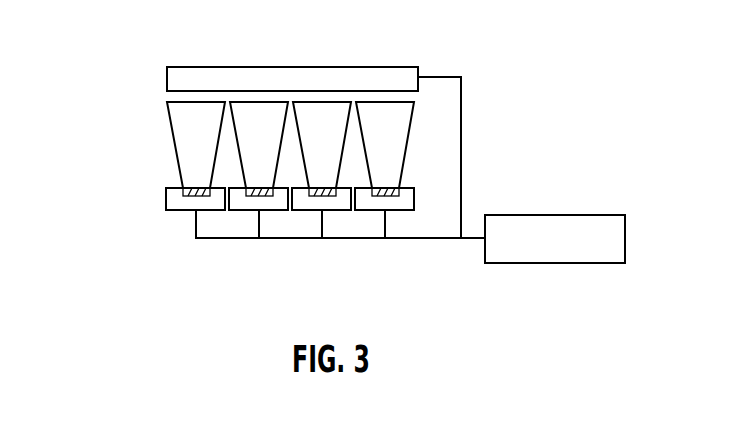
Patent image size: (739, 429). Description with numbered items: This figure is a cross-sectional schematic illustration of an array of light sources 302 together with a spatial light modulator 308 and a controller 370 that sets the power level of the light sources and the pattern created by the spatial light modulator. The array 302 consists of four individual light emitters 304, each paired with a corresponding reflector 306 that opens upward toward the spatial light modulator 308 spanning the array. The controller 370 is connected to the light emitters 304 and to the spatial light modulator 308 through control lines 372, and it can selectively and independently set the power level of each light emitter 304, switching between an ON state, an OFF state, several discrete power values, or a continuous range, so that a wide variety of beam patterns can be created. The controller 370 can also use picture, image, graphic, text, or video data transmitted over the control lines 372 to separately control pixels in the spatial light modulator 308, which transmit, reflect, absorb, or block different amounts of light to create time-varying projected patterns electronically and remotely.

The array of light sources 302 is at (135, 150).
The light emitter 304 is at (167, 193).
The reflector 306 is at (168, 130).
The spatial light modulator 308 is at (192, 66).
The controller 370 is at (583, 215).
The control lines 372 is at (461, 147).